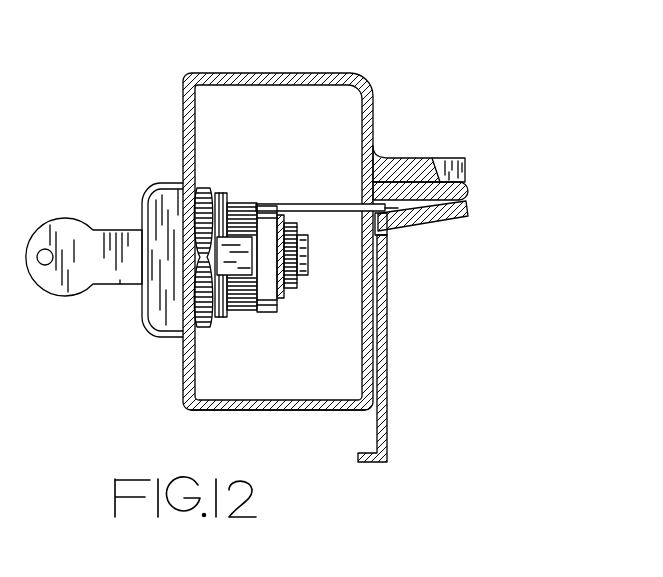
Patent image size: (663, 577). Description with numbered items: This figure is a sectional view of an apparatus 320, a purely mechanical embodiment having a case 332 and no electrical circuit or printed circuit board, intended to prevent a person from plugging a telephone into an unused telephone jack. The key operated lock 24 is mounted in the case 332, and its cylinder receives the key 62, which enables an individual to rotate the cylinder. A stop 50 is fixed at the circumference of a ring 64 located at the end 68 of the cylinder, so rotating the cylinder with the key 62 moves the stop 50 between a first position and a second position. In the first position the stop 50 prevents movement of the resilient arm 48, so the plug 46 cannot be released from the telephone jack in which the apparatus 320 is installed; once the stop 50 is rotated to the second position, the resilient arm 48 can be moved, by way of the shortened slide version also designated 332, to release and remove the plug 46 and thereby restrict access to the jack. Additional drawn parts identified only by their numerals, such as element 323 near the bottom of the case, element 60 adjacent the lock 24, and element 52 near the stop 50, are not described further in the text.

The apparatus 320 is at (174, 71).
The housing bottom wall 323 is at (184, 412).
The plug 46 is at (428, 158).
The resilient arm 48 is at (442, 222).
The case 332 is at (388, 446).
The stop 50 is at (334, 212).
The slot 52 is at (397, 214).
The key operated lock 24 is at (157, 333).
The key 62 is at (65, 218).
The nut 60 is at (207, 327).
The ring 64 is at (270, 313).
The end 68 is at (309, 271).